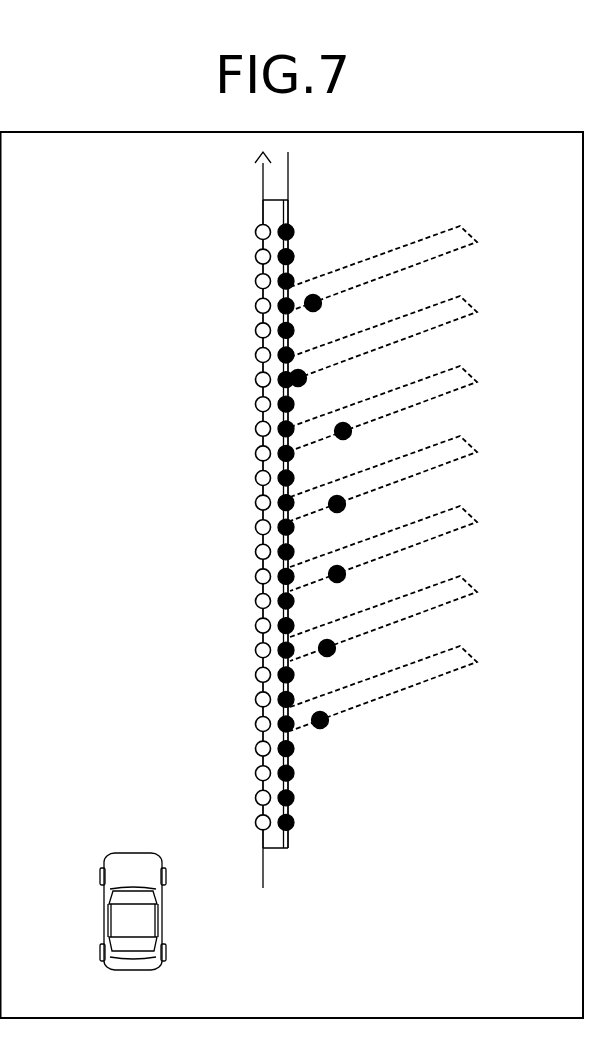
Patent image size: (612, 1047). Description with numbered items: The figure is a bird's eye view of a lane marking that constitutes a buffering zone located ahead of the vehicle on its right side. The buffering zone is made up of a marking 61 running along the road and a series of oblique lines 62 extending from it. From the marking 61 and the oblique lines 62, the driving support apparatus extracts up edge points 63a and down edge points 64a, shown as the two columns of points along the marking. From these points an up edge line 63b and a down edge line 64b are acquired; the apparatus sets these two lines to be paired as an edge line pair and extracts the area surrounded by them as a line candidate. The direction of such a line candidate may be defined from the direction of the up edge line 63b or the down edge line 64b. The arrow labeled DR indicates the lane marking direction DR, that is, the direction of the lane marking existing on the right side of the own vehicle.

The marking 61 is at (289, 850).
The oblique lines 62 is at (412, 690).
The up edge points 63a is at (261, 688).
The up edge line 63b is at (262, 850).
The down edge points 64a is at (290, 780).
The down edge line 64b is at (287, 850).
The lane marking direction DR is at (262, 888).